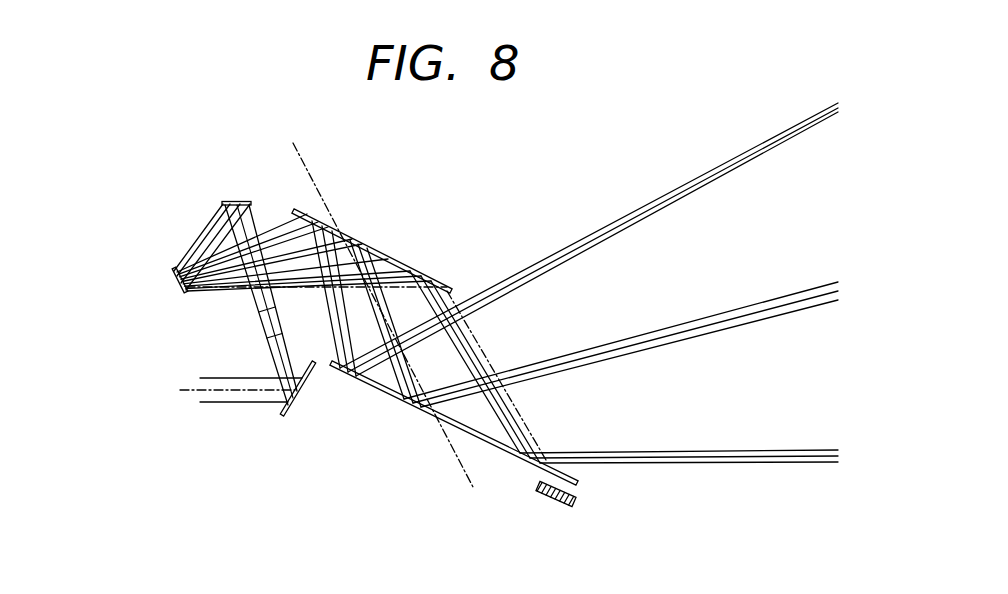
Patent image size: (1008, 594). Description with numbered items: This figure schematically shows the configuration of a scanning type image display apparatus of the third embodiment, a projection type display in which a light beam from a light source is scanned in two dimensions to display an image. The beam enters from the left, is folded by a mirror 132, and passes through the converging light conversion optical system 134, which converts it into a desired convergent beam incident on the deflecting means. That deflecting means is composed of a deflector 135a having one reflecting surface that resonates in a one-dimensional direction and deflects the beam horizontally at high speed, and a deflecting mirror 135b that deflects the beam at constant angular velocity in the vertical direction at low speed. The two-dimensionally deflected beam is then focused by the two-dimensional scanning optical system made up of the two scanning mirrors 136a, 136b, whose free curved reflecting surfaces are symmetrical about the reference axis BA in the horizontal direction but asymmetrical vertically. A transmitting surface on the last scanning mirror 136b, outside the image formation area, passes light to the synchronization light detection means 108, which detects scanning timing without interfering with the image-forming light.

The synchronization light detection means 108 is at (552, 507).
The reflecting mirror 132 is at (296, 409).
The converging light conversion optical system 134 is at (266, 331).
The deflector 135a is at (236, 201).
The deflecting mirror 135b is at (172, 283).
The scanning mirror 136a is at (398, 261).
The scanning mirror 136b is at (383, 393).
The reference axis BA is at (377, 301).